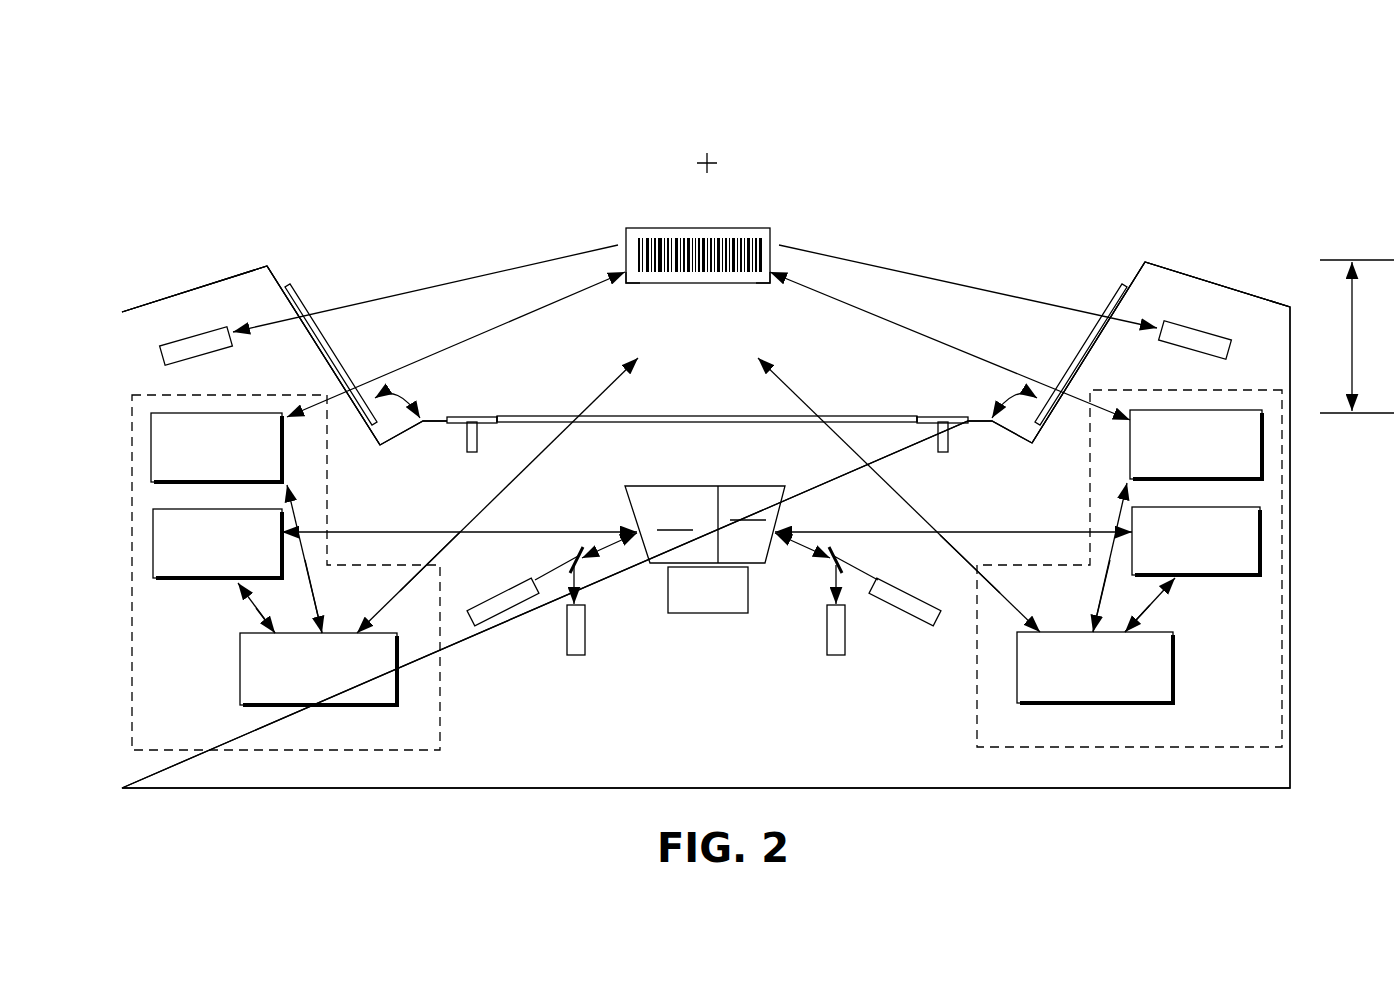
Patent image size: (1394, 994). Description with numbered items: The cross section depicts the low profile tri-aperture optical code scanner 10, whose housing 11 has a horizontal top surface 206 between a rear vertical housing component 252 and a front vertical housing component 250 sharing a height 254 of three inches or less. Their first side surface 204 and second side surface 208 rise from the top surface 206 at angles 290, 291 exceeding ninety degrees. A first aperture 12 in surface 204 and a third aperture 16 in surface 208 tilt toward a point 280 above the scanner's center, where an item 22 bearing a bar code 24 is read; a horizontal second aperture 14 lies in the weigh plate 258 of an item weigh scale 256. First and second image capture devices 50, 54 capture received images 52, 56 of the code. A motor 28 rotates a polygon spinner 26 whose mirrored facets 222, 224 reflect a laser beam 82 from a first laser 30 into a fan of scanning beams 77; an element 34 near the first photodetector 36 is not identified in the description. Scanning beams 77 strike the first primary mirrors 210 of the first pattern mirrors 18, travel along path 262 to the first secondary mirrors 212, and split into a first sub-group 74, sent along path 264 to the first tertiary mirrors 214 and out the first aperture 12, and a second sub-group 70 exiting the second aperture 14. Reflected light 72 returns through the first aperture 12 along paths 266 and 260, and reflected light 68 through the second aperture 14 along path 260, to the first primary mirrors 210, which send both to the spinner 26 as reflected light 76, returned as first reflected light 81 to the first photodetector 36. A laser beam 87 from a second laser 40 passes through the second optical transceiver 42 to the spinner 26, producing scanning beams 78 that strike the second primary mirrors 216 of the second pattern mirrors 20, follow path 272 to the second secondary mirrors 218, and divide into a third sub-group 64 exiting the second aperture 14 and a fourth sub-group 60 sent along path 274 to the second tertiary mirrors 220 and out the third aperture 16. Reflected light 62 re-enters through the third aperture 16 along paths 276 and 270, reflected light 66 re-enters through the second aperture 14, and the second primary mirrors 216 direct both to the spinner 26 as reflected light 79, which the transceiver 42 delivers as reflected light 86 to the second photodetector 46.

The optical code scanner 10 is at (1080, 138).
The housing 11 is at (512, 790).
The first aperture 12 is at (335, 358).
The second aperture 14 is at (690, 422).
The third aperture 16 is at (1078, 357).
The first plurality of pattern mirrors 18 is at (440, 724).
The second plurality of pattern mirrors 20 is at (977, 722).
The item 22 is at (665, 228).
The bar code 24 is at (738, 250).
The spinner 26 is at (708, 486).
The motor 28 is at (715, 613).
The first laser 30 is at (480, 625).
The left beam splitter mirror 34 is at (568, 553).
The first photodetector 36 is at (576, 656).
The second laser 40 is at (925, 627).
The second optical transceiver 42 is at (842, 553).
The second photodetector 46 is at (836, 656).
The first image capture device 50 is at (175, 340).
The received image 52 is at (345, 307).
The second image capture device 54 is at (1210, 330).
The received image 56 is at (1052, 305).
The fourth sub-group of scanning beams 60 is at (771, 280).
The reflected light 62 is at (1128, 410).
The third sub-group of scanning beams 64 is at (793, 392).
The reflected light 66 is at (1030, 628).
The reflected light 68 is at (430, 600).
The second sub-group of scanning beams 70 is at (610, 385).
The reflected light 72 is at (287, 410).
The first sub-group of scanning beams 74 is at (630, 282).
The reflected light 76 is at (632, 528).
The scanning beams 77 is at (288, 536).
The scanning beams 78 is at (1130, 535).
The reflected light 79 is at (778, 528).
The first reflected light 81 is at (578, 602).
The laser beam 82 is at (555, 580).
The reflected light 86 is at (830, 600).
The laser beam 87 is at (862, 583).
The first side surface 204 is at (278, 272).
The top surface 206 is at (447, 418).
The second side surface 208 is at (1135, 270).
The first primary mirrors 210 is at (153, 540).
The first secondary mirrors 212 is at (320, 705).
The first tertiary mirrors 214 is at (151, 440).
The second primary mirrors 216 is at (1262, 537).
The second secondary mirrors 218 is at (1100, 705).
The second tertiary mirrors 220 is at (1262, 440).
The mirrored facet 222 is at (675, 517).
The mirrored facet 224 is at (748, 507).
The front vertical housing component 250 is at (1200, 290).
The rear vertical housing component 252 is at (218, 295).
The height 254 is at (1357, 336).
The item weigh scale 256 is at (471, 452).
The weigh plate 258 is at (497, 418).
The path 260 is at (238, 585).
The path 262 is at (268, 628).
The path 264 is at (290, 483).
The path 266 is at (330, 623).
The path 270 is at (1170, 582).
The path 272 is at (1133, 630).
The path 274 is at (1128, 482).
The path 276 is at (1080, 625).
The point 280 is at (712, 158).
The angle 290 is at (398, 396).
The angle 291 is at (1014, 396).